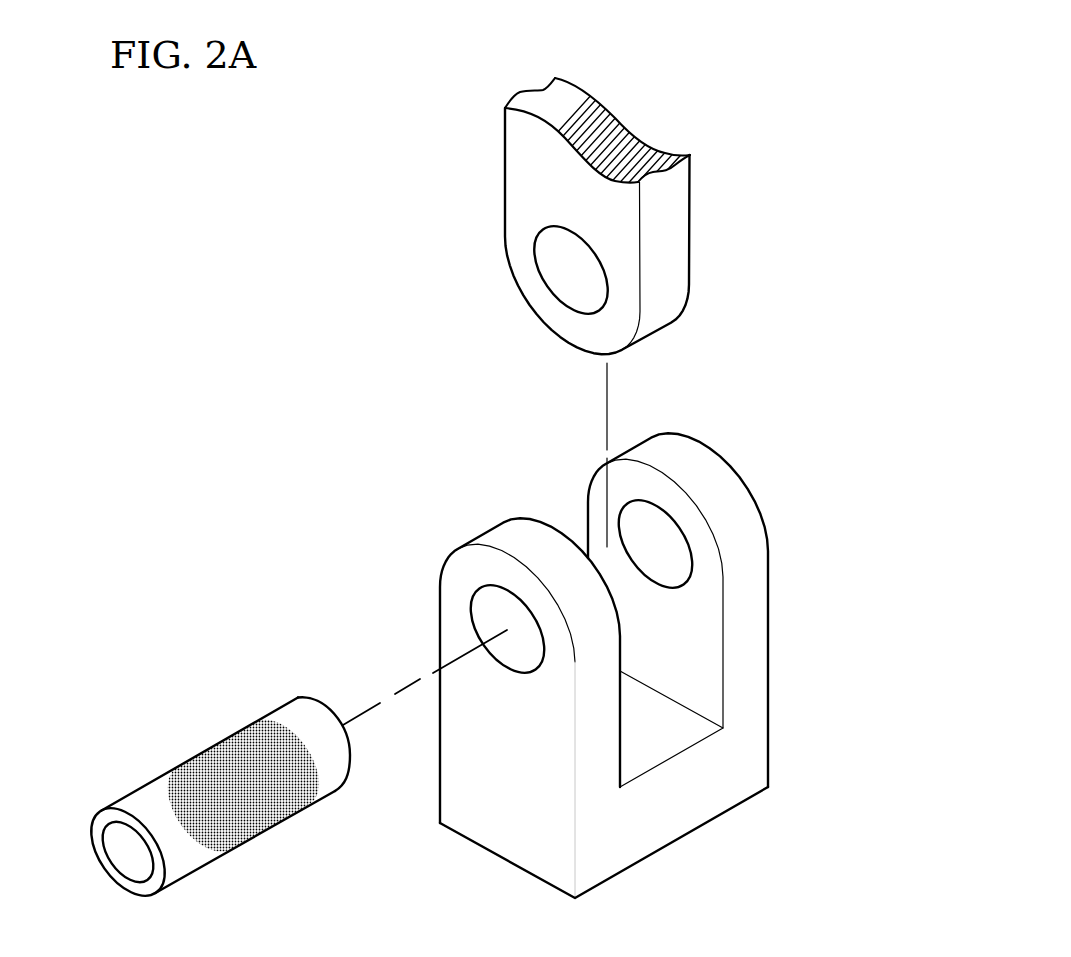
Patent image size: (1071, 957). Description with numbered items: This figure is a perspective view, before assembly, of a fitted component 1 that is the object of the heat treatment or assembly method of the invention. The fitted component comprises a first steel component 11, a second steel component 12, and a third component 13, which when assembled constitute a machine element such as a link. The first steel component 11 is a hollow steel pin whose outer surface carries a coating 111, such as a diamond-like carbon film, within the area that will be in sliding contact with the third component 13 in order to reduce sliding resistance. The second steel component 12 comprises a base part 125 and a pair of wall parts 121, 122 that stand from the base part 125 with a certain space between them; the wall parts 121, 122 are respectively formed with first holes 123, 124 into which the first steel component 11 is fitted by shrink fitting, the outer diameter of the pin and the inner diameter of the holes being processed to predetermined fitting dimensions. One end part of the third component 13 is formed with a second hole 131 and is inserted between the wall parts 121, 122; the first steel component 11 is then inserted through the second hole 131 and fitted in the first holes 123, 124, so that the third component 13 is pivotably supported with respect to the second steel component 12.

The coupling assembly 1 is at (878, 190).
The first steel component 11 is at (189, 784).
The coating 111 is at (223, 763).
The second steel component 12 is at (605, 642).
The wall part 121 is at (457, 584).
The wall part 122 is at (717, 473).
The first hole 123 is at (487, 630).
The first hole 124 is at (676, 521).
The base part 125 is at (675, 803).
The third component 13 is at (523, 190).
The second hole 131 is at (568, 277).